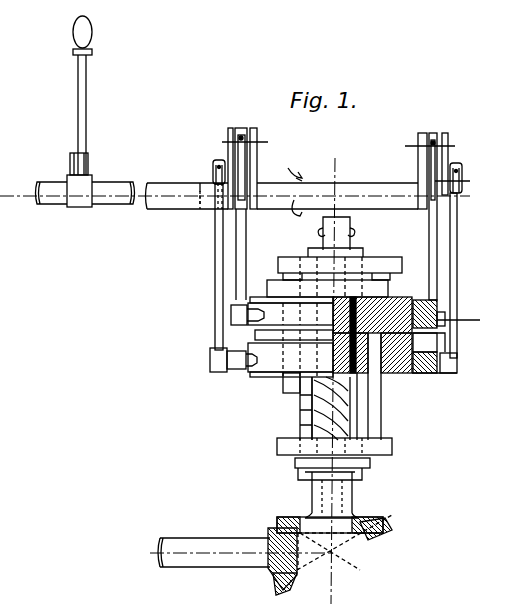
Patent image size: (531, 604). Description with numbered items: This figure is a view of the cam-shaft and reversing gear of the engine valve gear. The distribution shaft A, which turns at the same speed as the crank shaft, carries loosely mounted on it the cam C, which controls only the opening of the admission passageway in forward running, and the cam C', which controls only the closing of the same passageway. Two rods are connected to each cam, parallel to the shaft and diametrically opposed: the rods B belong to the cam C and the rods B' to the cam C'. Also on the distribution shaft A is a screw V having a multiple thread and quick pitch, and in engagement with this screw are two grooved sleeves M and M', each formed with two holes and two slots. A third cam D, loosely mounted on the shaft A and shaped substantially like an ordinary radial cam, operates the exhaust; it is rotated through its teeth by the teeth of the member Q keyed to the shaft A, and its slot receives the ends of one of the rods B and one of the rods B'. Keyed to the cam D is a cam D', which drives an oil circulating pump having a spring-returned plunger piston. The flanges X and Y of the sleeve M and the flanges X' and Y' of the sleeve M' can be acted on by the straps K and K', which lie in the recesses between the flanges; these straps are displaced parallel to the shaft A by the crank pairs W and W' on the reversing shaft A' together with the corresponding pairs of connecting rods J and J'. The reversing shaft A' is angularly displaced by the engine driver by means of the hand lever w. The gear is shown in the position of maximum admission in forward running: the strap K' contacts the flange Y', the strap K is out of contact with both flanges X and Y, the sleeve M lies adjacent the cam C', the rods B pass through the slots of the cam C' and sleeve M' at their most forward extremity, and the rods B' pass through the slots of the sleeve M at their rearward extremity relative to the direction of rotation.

The hand lever w is at (83, 75).
The crank pair W is at (329, 184).
The crank pair W' is at (329, 170).
The distribution shaft A is at (278, 216).
The reversing shaft A' is at (170, 158).
The connecting rods J is at (329, 267).
The connecting rods J' is at (329, 244).
The cam C is at (271, 257).
The cam C' is at (264, 282).
The grooved sleeve M is at (236, 306).
The strap K is at (202, 316).
The grooved sleeve M' is at (236, 352).
The strap K' is at (203, 360).
The rods B is at (250, 408).
The rods B' is at (260, 386).
The screw V is at (285, 443).
The cam D is at (255, 472).
The cam D' is at (251, 487).
The member Q is at (327, 492).
The flange X is at (427, 335).
The flange Y is at (467, 340).
The flange X' is at (467, 357).
The flange Y' is at (467, 370).